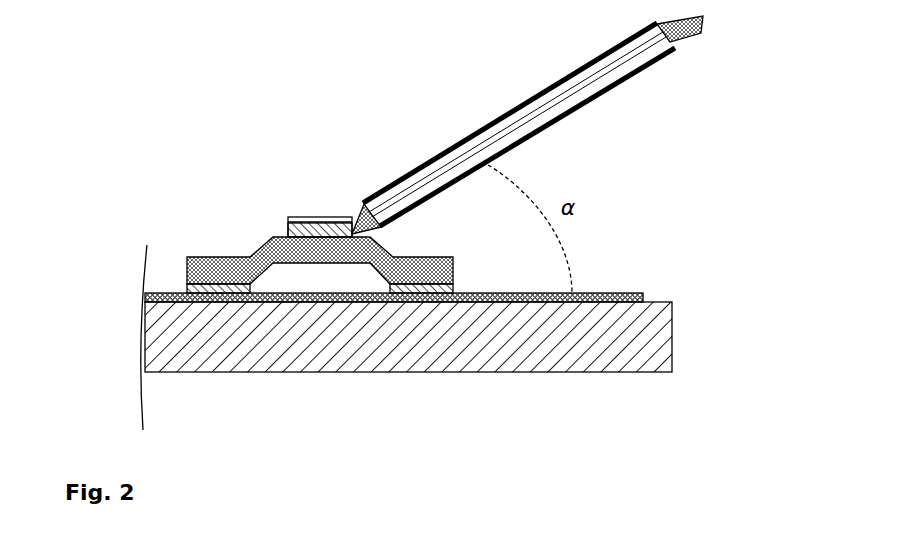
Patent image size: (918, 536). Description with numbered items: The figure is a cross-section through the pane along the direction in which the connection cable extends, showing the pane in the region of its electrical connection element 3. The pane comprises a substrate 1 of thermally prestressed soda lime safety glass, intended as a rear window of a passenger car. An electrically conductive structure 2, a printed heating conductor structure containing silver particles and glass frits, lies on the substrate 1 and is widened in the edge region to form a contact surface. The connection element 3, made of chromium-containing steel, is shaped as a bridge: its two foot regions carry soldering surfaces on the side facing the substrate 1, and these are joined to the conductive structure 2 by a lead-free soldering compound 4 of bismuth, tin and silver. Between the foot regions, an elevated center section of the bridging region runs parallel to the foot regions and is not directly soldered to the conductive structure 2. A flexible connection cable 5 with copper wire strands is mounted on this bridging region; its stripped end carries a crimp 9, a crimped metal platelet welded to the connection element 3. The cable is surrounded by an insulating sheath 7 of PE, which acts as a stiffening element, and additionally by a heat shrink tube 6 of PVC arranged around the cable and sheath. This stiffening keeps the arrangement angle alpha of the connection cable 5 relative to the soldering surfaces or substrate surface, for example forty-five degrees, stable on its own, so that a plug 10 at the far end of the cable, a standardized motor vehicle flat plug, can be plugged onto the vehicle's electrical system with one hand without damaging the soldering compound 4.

The substrate 1 is at (203, 347).
The electrically conductive structure 2 is at (632, 293).
The electrical connection element 3 is at (225, 263).
The soldering compound 4 is at (188, 292).
The connection cable 5 is at (317, 224).
The heat shrink tube 6 is at (470, 138).
The insulating sheath 7 is at (357, 217).
The crimp 9 is at (292, 217).
The plug 10 is at (695, 30).